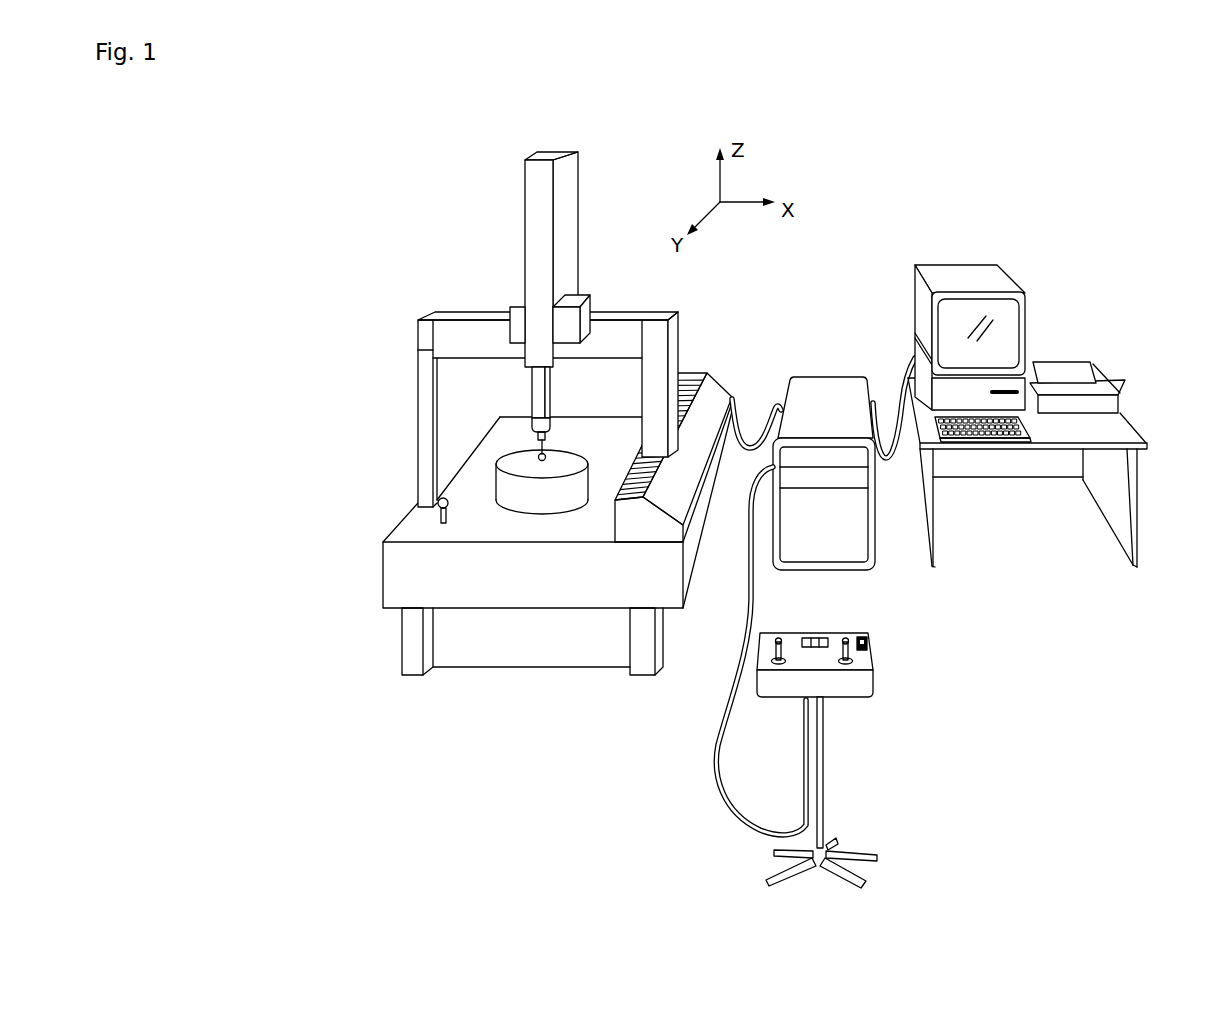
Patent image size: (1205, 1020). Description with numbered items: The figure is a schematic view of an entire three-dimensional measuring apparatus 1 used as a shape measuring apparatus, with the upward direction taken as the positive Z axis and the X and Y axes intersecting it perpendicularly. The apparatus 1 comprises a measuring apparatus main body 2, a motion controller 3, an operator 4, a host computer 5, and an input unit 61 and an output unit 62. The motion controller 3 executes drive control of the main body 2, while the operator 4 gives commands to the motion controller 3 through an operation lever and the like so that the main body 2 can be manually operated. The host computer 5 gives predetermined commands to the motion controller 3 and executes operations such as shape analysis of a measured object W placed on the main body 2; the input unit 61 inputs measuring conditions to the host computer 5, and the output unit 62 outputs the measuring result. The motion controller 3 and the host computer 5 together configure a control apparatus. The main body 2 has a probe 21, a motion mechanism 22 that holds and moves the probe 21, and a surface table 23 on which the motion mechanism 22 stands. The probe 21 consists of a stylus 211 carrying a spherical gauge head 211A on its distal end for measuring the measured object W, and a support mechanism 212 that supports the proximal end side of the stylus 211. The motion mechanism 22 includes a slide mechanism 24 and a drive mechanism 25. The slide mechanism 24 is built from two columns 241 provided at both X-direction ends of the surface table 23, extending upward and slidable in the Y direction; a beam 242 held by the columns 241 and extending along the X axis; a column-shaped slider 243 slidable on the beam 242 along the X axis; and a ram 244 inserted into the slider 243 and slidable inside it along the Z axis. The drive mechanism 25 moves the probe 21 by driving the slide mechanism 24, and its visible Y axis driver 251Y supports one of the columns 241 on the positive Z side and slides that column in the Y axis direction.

The 3D measuring apparatus 1 is at (976, 214).
The 3D measuring apparatus main body 2 is at (389, 179).
The motion controller 3 is at (833, 403).
The operator 4 is at (863, 662).
The host computer 5 is at (1005, 378).
The input unit 61 is at (997, 442).
The output unit 62 is at (1102, 387).
The probe 21 is at (529, 437).
The stylus 211 is at (606, 513).
The gauge head 211A is at (542, 461).
The support mechanism 212 is at (550, 423).
The motion mechanism 22 is at (391, 278).
The surface table 23 is at (415, 525).
The slide mechanism 24 is at (547, 329).
The columns 241 is at (423, 386).
The beam 242 is at (623, 327).
The slider 243 is at (568, 193).
The ram 244 is at (553, 391).
The drive mechanism 25 is at (707, 440).
The Y axis driver 251Y is at (745, 368).
The measured object W is at (511, 498).